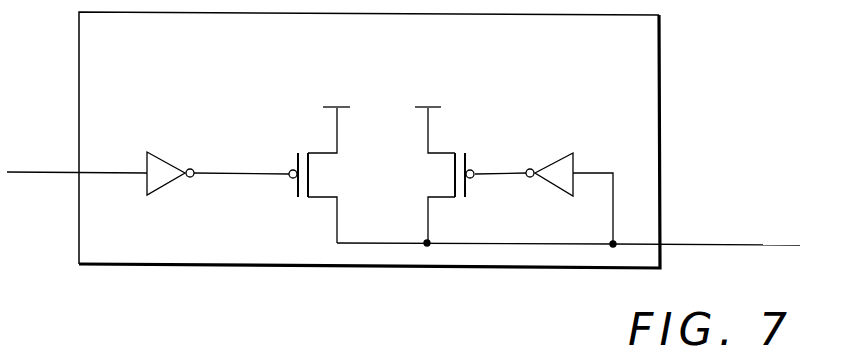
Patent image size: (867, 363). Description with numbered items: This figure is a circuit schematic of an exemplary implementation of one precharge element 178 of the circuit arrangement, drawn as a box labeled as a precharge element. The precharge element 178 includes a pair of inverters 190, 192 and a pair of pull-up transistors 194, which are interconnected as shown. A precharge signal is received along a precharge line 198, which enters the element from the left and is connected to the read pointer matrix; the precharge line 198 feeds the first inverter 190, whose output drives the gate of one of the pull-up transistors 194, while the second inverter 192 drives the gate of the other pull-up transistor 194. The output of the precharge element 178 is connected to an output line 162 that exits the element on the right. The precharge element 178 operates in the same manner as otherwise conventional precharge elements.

The precharge element 178 is at (650, 77).
The input line 198 is at (21, 175).
The inverter 190 is at (165, 158).
The PMOS transistors 194 is at (314, 199).
The inverter 192 is at (549, 160).
The output line 162 is at (688, 244).